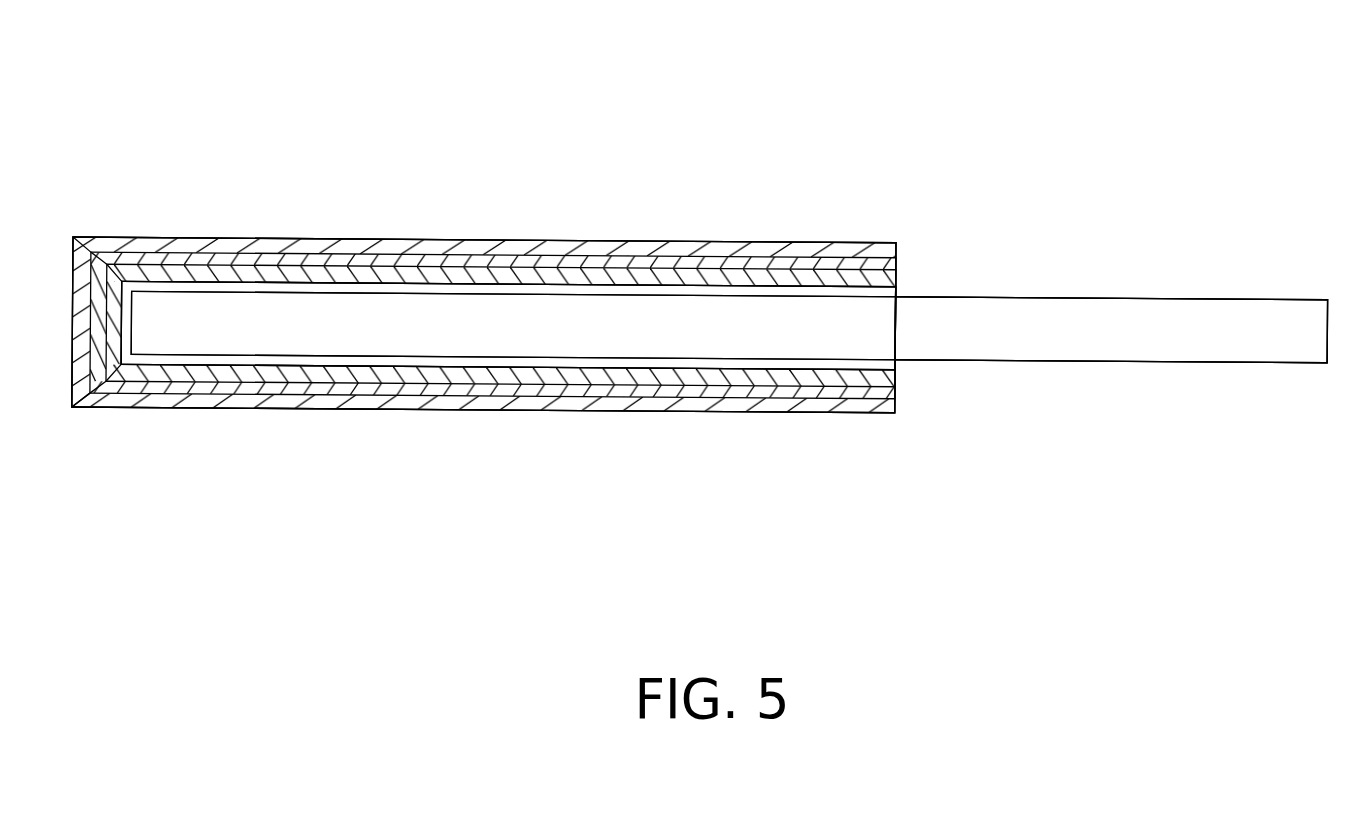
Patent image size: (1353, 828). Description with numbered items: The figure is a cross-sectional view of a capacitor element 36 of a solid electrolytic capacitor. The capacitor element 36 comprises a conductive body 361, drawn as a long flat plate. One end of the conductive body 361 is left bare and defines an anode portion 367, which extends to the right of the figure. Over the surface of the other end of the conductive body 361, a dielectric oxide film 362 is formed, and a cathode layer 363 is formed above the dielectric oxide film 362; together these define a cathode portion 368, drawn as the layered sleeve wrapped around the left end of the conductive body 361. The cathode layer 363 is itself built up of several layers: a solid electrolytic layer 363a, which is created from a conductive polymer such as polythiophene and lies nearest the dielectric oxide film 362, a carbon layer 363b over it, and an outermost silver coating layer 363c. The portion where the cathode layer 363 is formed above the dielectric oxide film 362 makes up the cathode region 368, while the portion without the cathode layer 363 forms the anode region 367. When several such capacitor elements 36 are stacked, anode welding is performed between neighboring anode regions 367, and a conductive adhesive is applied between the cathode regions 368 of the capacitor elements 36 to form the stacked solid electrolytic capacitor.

The capacitor element 36 is at (862, 218).
The conductive body 361 is at (1178, 308).
The dielectric oxide film 362 is at (590, 292).
The cathode layer 363 is at (327, 248).
The solid electrolytic layer 363a is at (473, 375).
The carbon layer 363b is at (662, 390).
The silver coating layer 363c is at (827, 403).
The anode portion 367 is at (1110, 345).
The cathode portion 368 is at (267, 402).